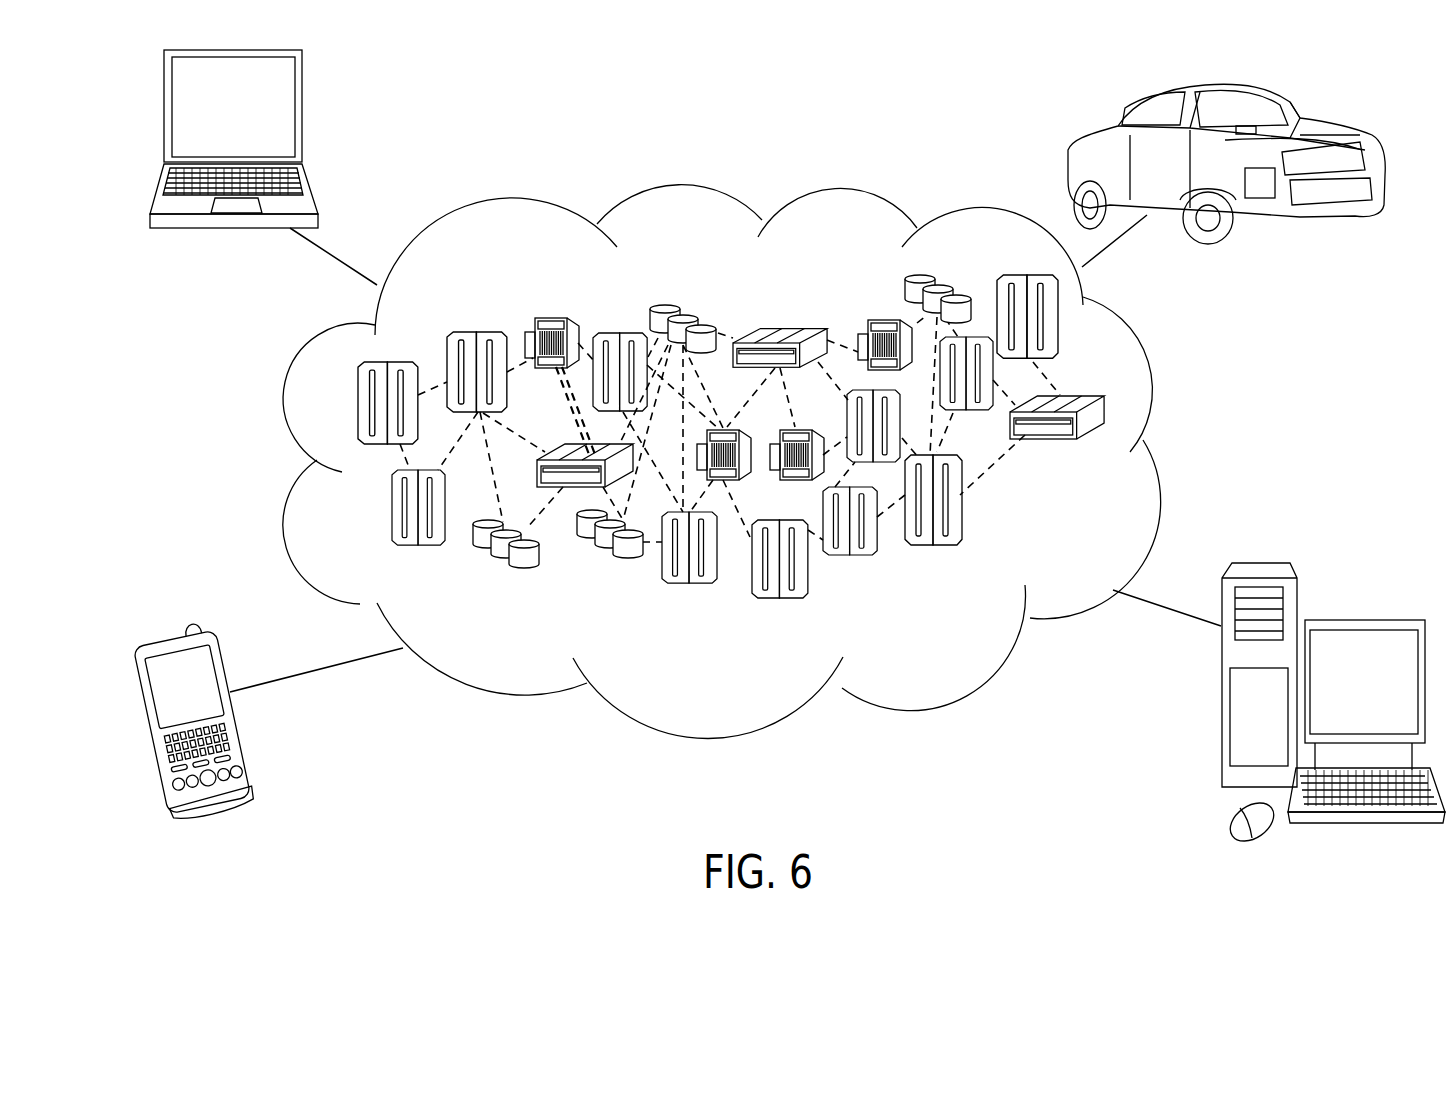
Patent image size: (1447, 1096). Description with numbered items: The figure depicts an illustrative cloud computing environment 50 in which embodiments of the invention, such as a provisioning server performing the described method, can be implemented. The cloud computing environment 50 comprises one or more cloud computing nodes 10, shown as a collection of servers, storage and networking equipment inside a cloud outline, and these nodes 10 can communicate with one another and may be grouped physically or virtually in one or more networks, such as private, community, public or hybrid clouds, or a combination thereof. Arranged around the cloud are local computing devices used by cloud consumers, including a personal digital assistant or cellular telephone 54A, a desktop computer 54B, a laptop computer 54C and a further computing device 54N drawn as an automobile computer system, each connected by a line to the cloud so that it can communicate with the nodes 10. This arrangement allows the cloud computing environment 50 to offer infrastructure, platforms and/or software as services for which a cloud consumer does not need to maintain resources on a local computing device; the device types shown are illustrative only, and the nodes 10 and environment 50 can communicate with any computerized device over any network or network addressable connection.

The cloud computing environment 50 is at (1152, 370).
The cloud computing node 10 is at (1112, 457).
The personal digital assistant (PDA) or cellular telephone 54A is at (140, 717).
The desktop computer 54B is at (1352, 620).
The laptop computer 54C is at (164, 112).
The computing device 54N is at (1280, 105).